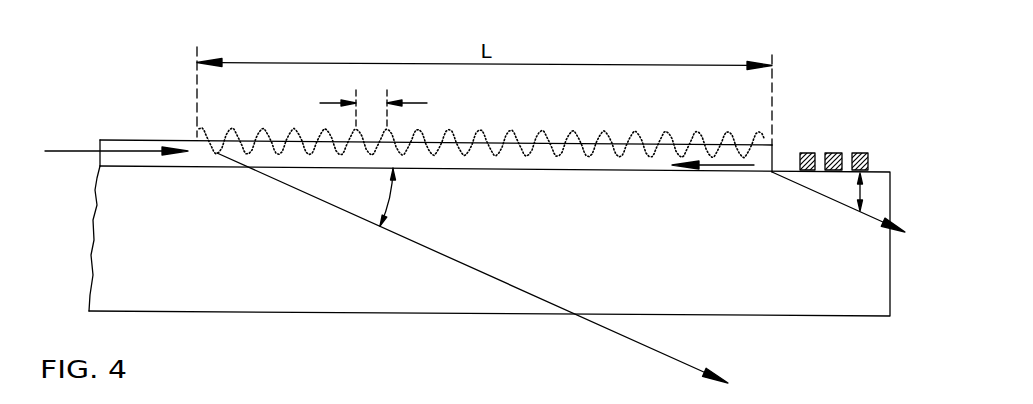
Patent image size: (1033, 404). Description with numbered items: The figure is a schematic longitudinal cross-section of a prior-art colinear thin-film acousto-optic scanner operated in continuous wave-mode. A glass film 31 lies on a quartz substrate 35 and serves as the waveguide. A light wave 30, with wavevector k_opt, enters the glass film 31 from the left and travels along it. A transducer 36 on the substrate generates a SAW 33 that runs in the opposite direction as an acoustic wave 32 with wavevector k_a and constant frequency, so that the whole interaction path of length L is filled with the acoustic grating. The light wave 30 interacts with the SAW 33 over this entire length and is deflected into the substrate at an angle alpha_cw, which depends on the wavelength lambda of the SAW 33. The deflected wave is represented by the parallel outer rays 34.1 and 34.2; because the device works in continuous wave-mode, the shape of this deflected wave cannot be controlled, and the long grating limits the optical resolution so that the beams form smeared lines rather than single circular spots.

The light wave 30 is at (70, 150).
The glass film 31 is at (130, 145).
The acoustic wave 32 is at (725, 162).
The SAW 33 is at (604, 128).
The outer ray 34.1 is at (627, 338).
The outer ray 34.2 is at (864, 211).
The quartz substrate 35 is at (489, 241).
The transducer 36 is at (832, 152).